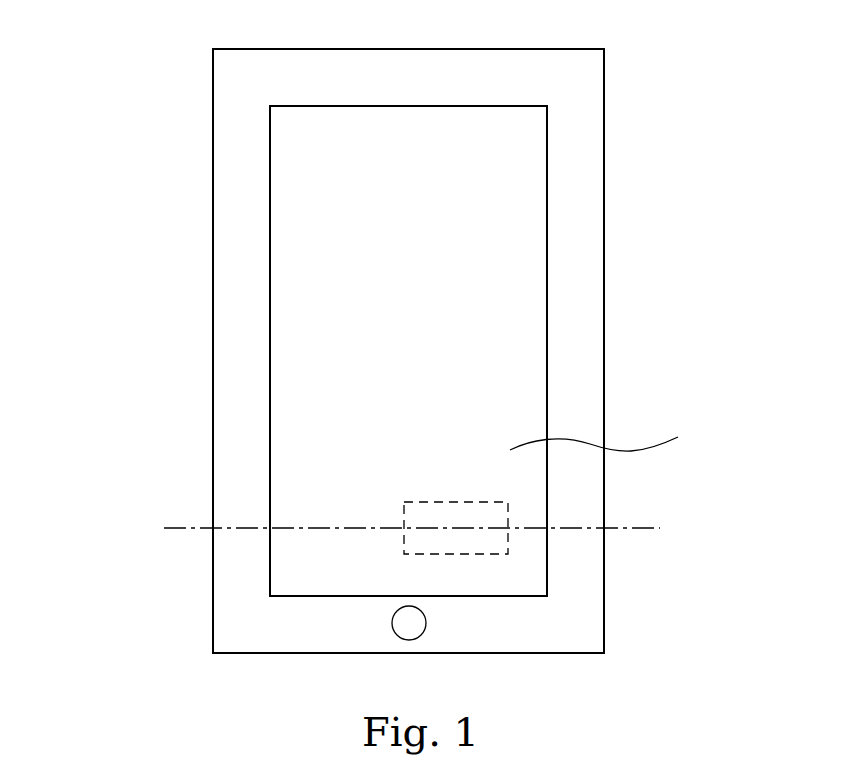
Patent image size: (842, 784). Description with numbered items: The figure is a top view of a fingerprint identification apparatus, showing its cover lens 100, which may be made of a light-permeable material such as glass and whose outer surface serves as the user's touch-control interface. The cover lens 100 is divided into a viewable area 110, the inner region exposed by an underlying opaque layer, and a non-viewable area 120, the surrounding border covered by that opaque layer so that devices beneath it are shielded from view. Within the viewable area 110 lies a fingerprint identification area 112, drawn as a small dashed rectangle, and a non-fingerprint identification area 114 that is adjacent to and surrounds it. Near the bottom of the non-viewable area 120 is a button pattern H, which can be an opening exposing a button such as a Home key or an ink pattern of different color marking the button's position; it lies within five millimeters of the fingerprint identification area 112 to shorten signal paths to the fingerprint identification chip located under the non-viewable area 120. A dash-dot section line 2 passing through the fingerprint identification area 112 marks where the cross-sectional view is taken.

The cover lens 100 is at (103, 185).
The viewable area 110 is at (303, 203).
The non-viewable area 120 is at (245, 240).
The non-fingerprint identification area 114 is at (623, 437).
The fingerprint identification area 112 is at (493, 512).
The button pattern H is at (408, 623).
The line 2- 2 is at (164, 528).